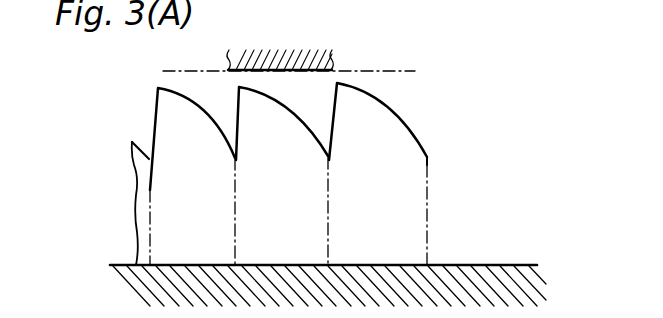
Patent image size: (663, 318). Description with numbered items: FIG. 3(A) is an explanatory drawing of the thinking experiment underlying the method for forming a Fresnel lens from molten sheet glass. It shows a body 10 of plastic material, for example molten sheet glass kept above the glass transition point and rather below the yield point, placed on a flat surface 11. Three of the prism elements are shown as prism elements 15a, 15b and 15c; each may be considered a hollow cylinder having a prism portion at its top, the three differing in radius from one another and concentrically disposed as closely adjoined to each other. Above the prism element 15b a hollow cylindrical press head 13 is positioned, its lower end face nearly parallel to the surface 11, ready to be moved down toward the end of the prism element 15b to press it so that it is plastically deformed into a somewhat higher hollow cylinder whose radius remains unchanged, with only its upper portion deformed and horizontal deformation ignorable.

The saw blade body 10 is at (141, 122).
The flat surface 11 is at (483, 264).
The hollow cylindrical press head 13 is at (327, 65).
The prism element 15a is at (377, 130).
The prism element 15b is at (273, 123).
The prism element 15c is at (187, 127).